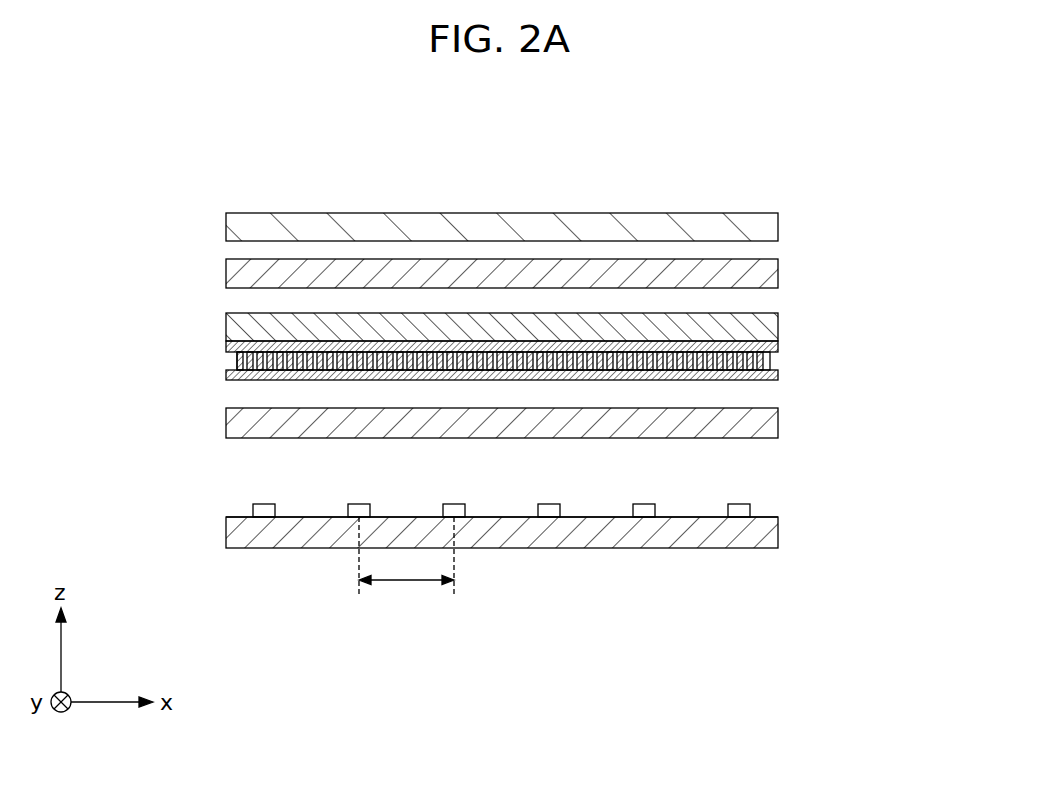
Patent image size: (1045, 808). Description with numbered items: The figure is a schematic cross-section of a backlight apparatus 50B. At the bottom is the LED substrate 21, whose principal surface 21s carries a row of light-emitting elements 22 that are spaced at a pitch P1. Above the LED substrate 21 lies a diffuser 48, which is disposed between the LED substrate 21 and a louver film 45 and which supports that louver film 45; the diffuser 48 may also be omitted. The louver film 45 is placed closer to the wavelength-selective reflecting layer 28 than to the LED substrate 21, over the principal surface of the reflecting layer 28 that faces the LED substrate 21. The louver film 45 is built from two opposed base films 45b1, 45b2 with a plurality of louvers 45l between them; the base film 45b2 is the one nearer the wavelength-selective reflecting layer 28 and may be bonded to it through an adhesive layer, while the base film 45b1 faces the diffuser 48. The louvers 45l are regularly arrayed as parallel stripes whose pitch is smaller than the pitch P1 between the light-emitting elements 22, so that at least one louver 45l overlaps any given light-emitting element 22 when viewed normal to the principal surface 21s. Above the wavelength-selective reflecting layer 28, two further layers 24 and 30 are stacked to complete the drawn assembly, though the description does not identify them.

The backlight apparatus 50B is at (510, 375).
The upper substrate / cover layer 30 is at (735, 231).
The layer 24 is at (735, 277).
The wavelength-selective reflecting layer 28 is at (735, 337).
The louver film 45 is at (424, 364).
The base film 45b2 is at (226, 347).
The louvers 45l is at (237, 362).
The base film 45b1 is at (228, 379).
The diffuser 48 is at (735, 427).
The light-emitting elements 22 is at (738, 510).
The principal surface 21s is at (760, 514).
The LED substrate 21 is at (765, 536).
The pitch P1 is at (406, 566).